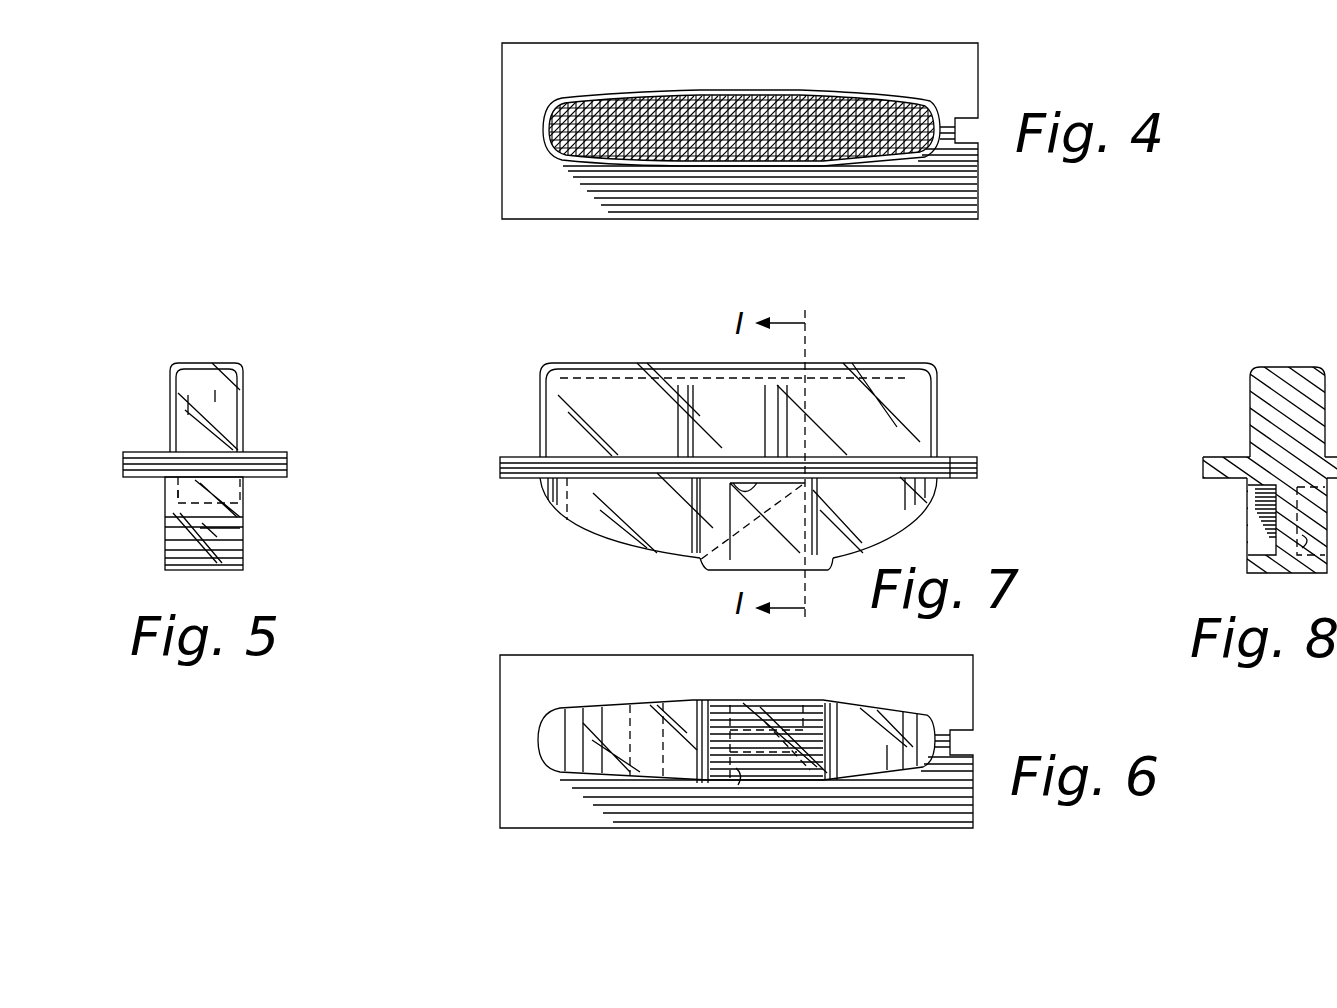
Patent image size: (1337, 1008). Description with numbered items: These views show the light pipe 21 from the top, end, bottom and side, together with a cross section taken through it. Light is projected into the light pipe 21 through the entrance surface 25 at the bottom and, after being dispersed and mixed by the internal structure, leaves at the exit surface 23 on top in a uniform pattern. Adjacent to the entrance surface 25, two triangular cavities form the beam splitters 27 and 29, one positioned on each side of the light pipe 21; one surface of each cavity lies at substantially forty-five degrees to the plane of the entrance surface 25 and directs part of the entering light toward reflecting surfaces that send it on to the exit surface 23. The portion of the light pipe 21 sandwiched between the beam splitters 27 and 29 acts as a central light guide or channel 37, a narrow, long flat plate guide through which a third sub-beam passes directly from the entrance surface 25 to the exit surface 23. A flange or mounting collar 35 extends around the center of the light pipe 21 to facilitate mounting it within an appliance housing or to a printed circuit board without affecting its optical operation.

In FIG. 4, the light pipe 21 is at (398, 87).
In FIG. 5, the light pipe 21 is at (285, 275).
In FIG. 8, the light pipe 21 is at (1150, 365).
In FIG. 4, the exit surface 23 is at (685, 137).
In FIG. 5, the exit surface 23 is at (198, 363).
In FIG. 7, the exit surface 23 is at (882, 363).
In FIG. 8, the exit surface 23 is at (1268, 367).
In FIG. 5, the entrance surface 25 is at (228, 568).
In FIG. 7, the entrance surface 25 is at (766, 564).
In FIG. 6, the entrance surface 25 is at (815, 705).
In FIG. 8, the entrance surface 25 is at (1287, 525).
In FIG. 5, the beam splitter 27 is at (245, 490).
In FIG. 7, the beam splitter 27 is at (735, 500).
In FIG. 6, the beam splitter 27 is at (738, 785).
In FIG. 8, the beam splitter 27 is at (1255, 513).
In FIG. 5, the beam splitter 29 is at (178, 490).
In FIG. 7, the beam splitter 29 is at (700, 560).
In FIG. 6, the beam splitter 29 is at (765, 722).
In FIG. 8, the beam splitter 29 is at (1300, 555).
In FIG. 4, the flange or mounting collar 35 is at (533, 168).
In FIG. 5, the flange or mounting collar 35 is at (272, 452).
In FIG. 7, the flange or mounting collar 35 is at (960, 457).
In FIG. 6, the flange or mounting collar 35 is at (736, 741).
In FIG. 8, the flange or mounting collar 35 is at (1225, 457).
In FIG. 5, the central light guide or channel 37 is at (220, 530).
In FIG. 6, the central light guide or channel 37 is at (770, 730).